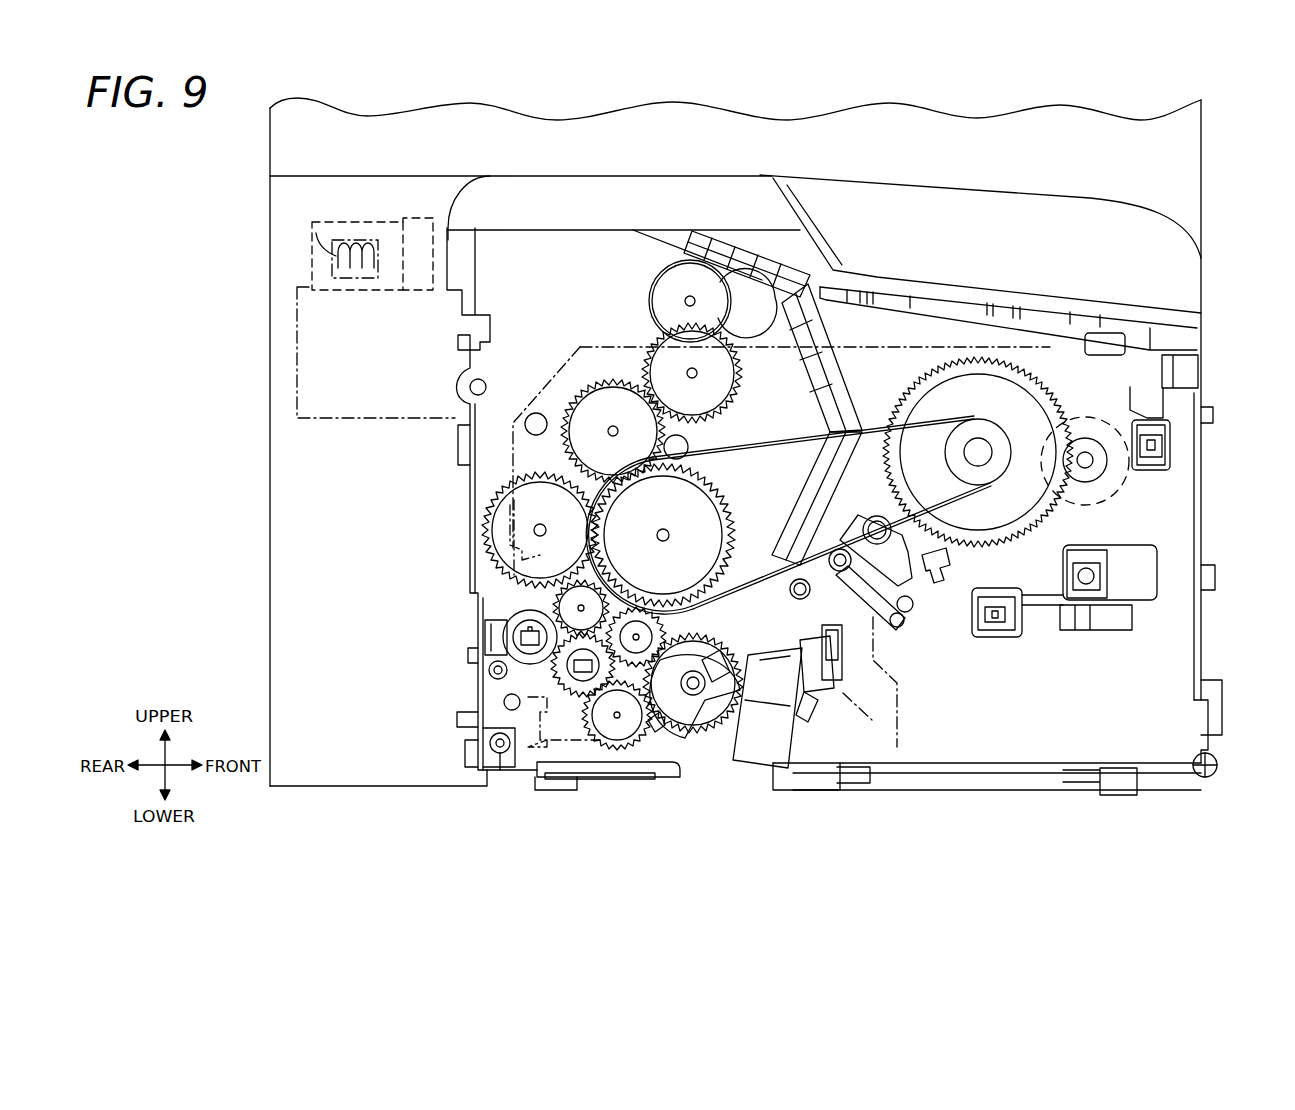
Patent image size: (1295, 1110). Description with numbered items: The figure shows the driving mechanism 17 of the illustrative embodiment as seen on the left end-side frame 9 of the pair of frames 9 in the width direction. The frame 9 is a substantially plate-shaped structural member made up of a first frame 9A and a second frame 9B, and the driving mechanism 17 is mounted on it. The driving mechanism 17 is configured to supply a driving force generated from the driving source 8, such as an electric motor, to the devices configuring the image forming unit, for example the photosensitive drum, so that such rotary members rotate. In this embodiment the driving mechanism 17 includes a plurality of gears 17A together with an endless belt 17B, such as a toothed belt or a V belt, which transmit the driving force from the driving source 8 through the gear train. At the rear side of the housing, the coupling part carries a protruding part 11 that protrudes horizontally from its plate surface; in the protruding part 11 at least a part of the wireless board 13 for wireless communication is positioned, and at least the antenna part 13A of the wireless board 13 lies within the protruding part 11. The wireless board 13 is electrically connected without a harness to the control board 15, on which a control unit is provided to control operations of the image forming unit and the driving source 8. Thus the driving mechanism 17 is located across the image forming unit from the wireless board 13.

The driving source 8 is at (1125, 492).
The frame 9 is at (774, 625).
The first frame 9A is at (1163, 665).
The second frame 9B is at (352, 740).
The protruding part 11 is at (268, 264).
The wireless board 13 is at (363, 224).
The antenna part 13A is at (332, 252).
The control board 15 is at (433, 220).
The driving mechanism 17 is at (880, 366).
The gears 17A is at (1047, 396).
The endless belt 17B is at (930, 432).